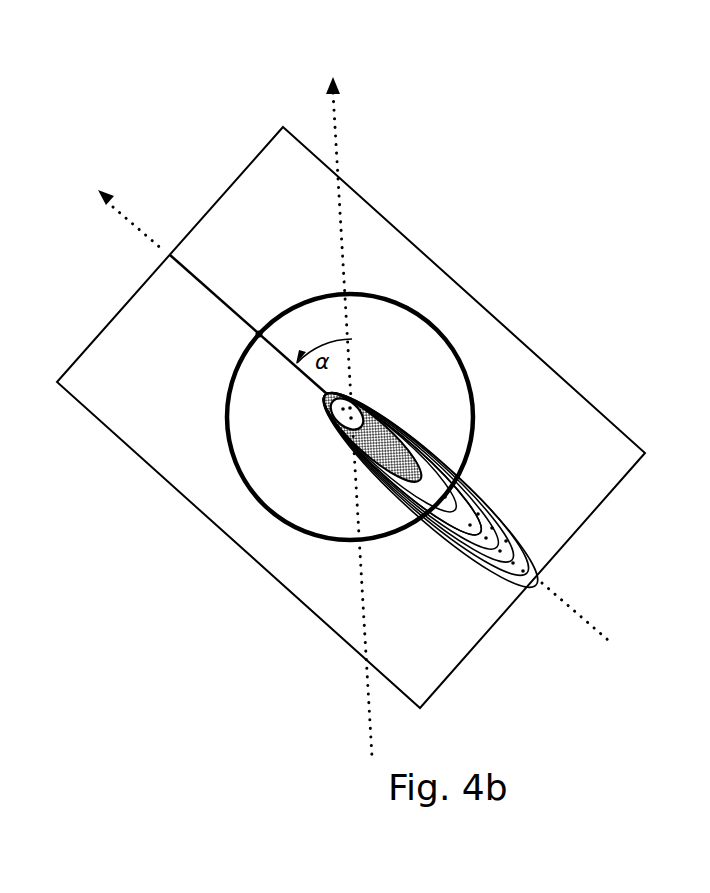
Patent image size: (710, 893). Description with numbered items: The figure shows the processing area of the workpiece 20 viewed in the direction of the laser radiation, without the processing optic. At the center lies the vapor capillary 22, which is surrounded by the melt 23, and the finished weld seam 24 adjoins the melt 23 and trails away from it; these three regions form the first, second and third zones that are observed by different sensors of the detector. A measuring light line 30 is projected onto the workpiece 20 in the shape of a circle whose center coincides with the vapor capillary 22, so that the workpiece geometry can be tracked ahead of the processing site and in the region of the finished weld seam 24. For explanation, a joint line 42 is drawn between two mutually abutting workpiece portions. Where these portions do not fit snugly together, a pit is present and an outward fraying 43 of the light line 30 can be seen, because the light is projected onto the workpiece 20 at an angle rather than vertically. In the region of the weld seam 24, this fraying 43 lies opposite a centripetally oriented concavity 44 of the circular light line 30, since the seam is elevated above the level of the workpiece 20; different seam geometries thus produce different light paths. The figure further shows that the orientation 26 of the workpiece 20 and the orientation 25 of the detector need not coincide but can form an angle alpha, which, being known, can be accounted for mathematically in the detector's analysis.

The workpiece 20 is at (170, 438).
The vapor capillary 22 is at (358, 398).
The melt 23 is at (407, 435).
The weld seam 24 is at (522, 557).
The orientation of detector 25 is at (342, 401).
The orientation of workpiece 26 is at (335, 404).
The light line 30 is at (410, 305).
The joint line 42 is at (185, 267).
The fraying 43 is at (259, 334).
The centripetally oriented concavity 44 is at (440, 490).